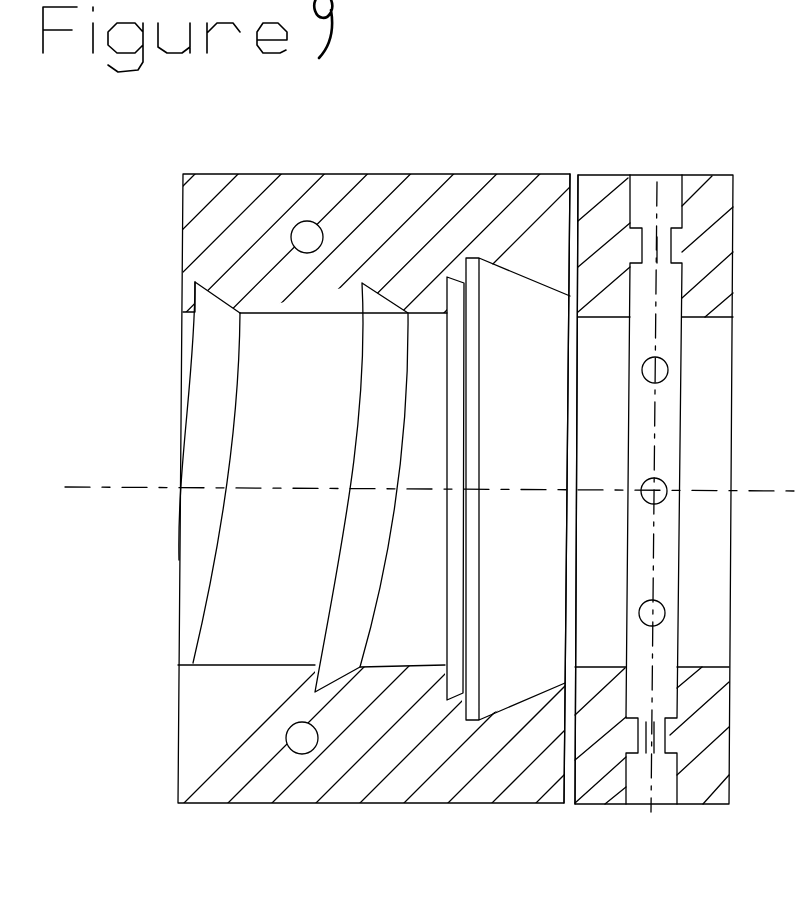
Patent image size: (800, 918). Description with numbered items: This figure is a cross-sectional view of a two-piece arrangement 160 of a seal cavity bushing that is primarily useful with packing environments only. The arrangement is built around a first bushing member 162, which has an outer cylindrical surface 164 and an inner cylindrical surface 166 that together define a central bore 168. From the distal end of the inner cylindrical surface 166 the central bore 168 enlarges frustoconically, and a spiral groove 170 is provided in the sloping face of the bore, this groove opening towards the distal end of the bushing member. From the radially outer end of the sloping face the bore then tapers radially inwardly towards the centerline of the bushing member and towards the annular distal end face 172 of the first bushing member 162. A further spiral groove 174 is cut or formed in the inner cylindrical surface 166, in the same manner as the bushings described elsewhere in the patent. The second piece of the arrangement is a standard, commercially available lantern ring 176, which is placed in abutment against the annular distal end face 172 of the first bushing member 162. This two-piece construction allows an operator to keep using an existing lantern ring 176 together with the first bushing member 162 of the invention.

The two-piece arrangement 160 is at (645, 84).
The first bushing member 162 is at (283, 138).
The outer cylindrical surface 164 is at (376, 146).
The inner cylindrical surface 166 is at (231, 657).
The central bore 168 is at (531, 464).
The spiral groove 170 is at (453, 702).
The annular distal end face 172 is at (569, 224).
The spiral groove 174 is at (198, 296).
The lantern ring 176 is at (786, 140).